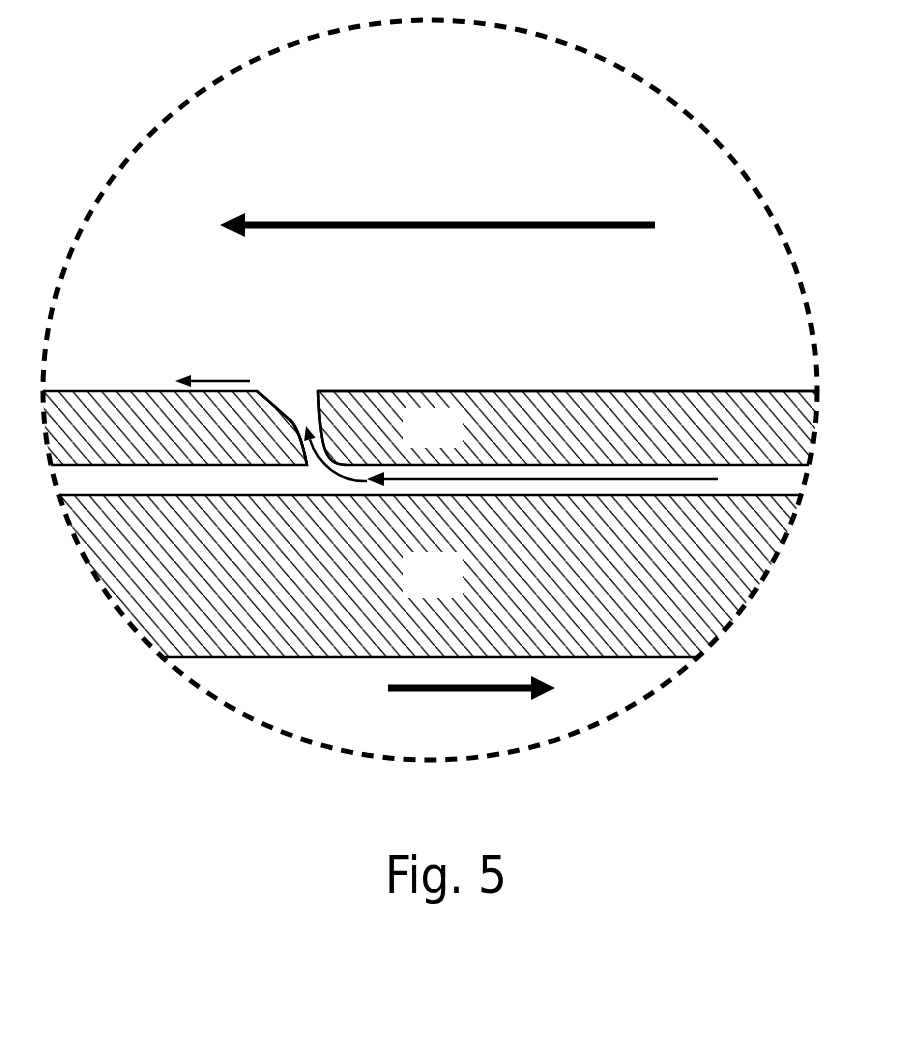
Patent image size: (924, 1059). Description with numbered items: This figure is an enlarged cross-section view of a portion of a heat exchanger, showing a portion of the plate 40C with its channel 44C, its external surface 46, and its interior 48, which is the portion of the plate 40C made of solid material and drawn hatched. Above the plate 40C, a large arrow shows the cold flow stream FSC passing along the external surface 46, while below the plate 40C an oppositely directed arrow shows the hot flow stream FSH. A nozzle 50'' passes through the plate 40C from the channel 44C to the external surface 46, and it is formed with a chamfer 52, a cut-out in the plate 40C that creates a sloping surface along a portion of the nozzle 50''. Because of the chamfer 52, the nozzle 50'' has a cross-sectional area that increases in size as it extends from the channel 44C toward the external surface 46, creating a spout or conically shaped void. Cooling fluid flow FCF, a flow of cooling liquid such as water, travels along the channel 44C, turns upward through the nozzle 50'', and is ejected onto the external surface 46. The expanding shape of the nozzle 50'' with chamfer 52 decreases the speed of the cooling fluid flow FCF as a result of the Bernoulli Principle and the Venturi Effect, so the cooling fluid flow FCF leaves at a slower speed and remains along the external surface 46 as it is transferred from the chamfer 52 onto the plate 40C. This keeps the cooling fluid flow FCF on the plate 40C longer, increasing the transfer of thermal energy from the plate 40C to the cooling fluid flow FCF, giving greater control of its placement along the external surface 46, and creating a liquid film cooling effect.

The plate 40C is at (108, 380).
The channel 44C is at (777, 463).
The external surface 46 is at (610, 390).
The interior 48 is at (447, 438).
The nozzle 50'' is at (304, 381).
The chamfer 52 is at (266, 395).
The cold flow stream FSC is at (392, 222).
The hot flow stream FSH is at (473, 692).
The cooling fluid flow FCF is at (848, 487).